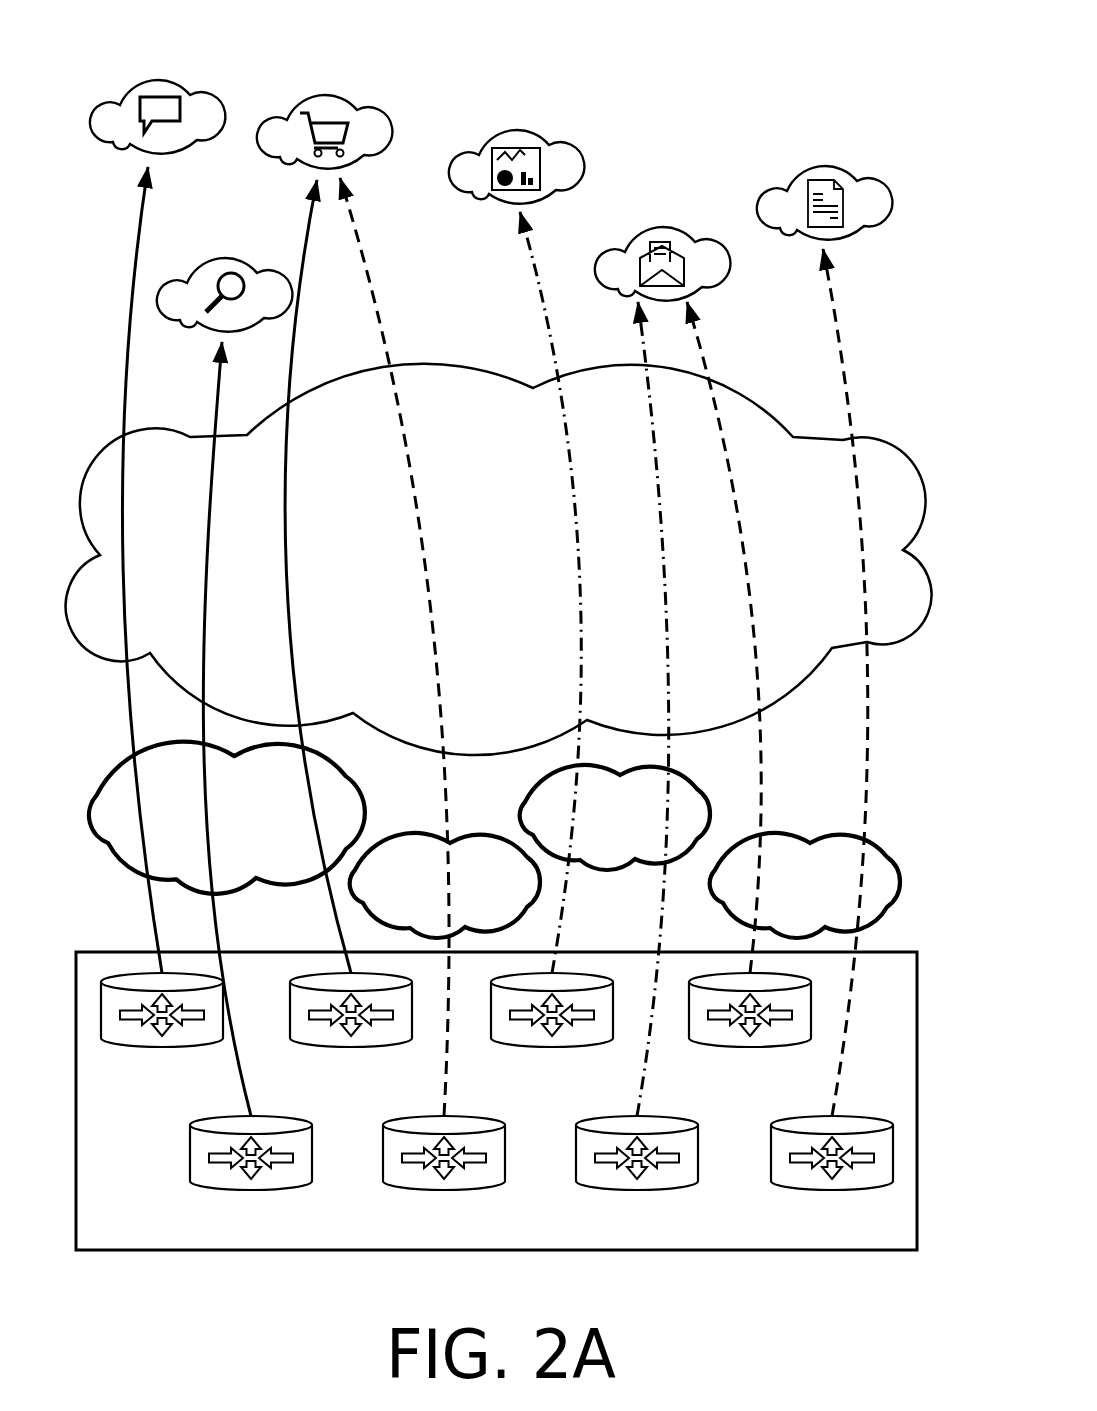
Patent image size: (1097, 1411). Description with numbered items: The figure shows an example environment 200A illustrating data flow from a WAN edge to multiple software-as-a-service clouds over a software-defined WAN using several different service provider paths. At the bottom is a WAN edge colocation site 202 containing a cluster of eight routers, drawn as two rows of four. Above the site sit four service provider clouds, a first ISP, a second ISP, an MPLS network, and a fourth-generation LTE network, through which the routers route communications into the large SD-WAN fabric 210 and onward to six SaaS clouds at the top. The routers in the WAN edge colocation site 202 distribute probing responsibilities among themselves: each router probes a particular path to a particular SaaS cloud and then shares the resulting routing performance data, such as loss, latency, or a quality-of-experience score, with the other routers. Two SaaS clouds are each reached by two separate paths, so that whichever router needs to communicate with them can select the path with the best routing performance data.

The environment 200A is at (846, 30).
The WAN edge colocation site 202 is at (262, 1282).
The SD-WAN fabric 210 is at (477, 590).